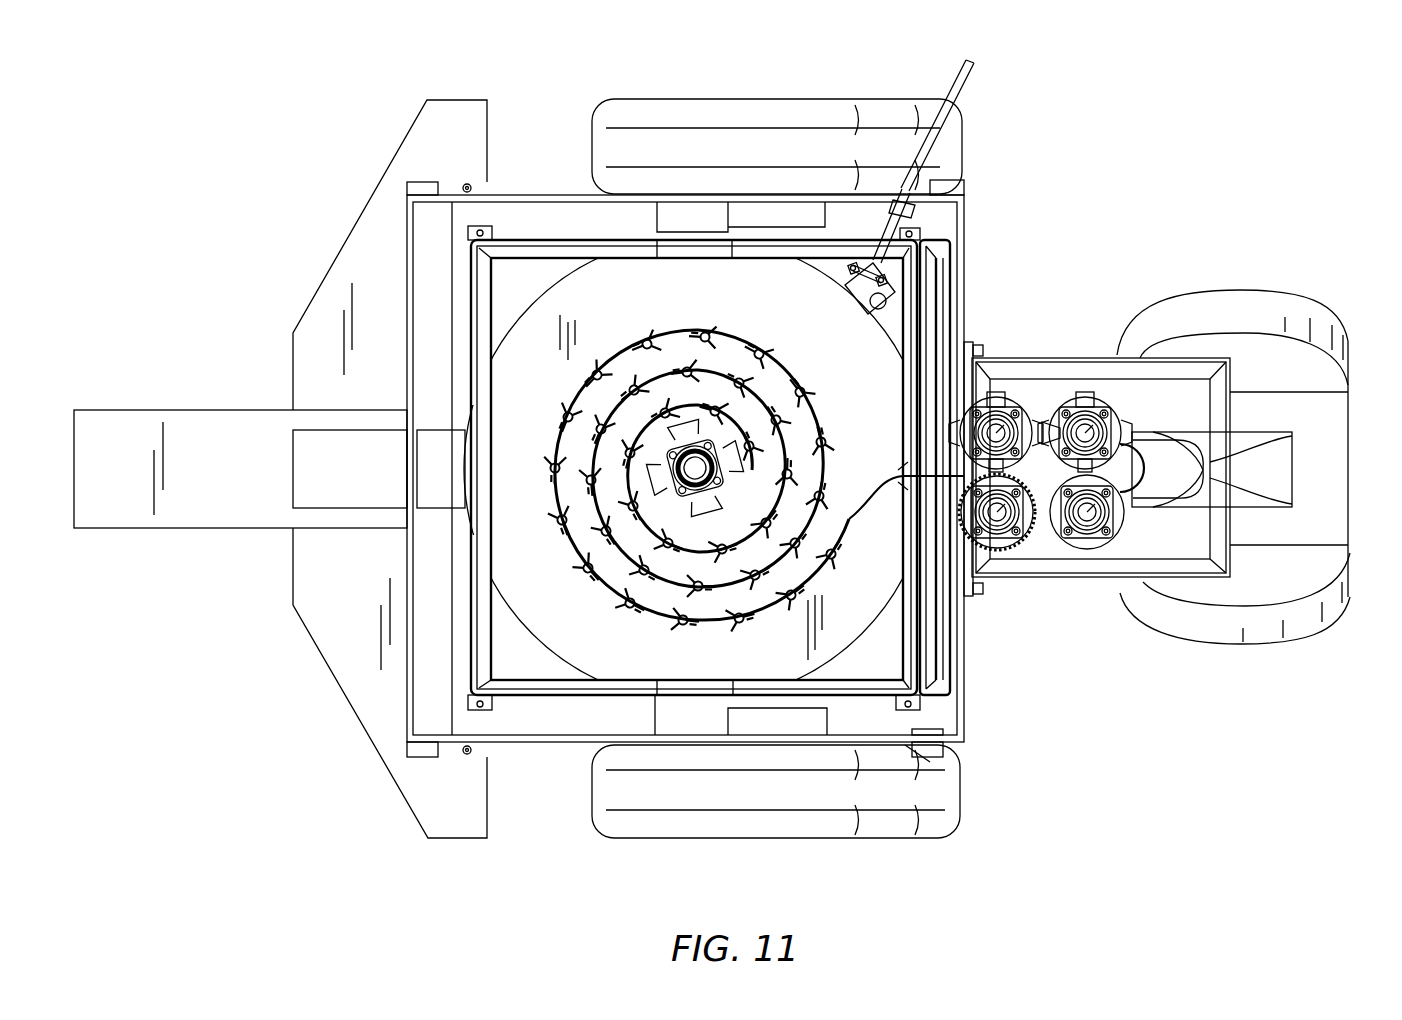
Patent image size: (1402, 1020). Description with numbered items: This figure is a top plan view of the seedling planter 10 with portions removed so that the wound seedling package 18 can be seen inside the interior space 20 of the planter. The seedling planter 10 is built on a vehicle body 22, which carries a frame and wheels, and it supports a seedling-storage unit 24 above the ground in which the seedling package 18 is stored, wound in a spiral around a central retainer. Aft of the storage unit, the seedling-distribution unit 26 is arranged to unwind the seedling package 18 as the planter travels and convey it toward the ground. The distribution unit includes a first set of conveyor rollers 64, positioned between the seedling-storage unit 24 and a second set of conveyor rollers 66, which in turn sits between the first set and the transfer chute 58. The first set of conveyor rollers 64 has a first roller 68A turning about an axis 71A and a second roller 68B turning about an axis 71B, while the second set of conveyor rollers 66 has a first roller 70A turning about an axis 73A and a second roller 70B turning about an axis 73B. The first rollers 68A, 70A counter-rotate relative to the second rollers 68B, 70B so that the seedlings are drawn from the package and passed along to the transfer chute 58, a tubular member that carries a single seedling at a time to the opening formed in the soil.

The seedling planter 10 is at (223, 127).
The seedling package 18 is at (620, 340).
The interior space 20 is at (485, 298).
The vehicle body 22 is at (283, 370).
The seedling-storage unit 24 is at (497, 185).
The seedling-distribution unit 26 is at (1238, 377).
The transfer chute 58 is at (1210, 468).
The first set of conveyor rollers 64 is at (993, 380).
The second set of conveyor rollers 66 is at (1127, 533).
The first roller 68A is at (1017, 390).
The second roller 68B is at (1033, 553).
The first roller 70A is at (1113, 395).
The second roller 70B is at (1100, 552).
The axis 71A is at (1027, 407).
The axis 71B is at (1010, 540).
The axis 73A is at (1113, 417).
The axis 73B is at (1087, 538).